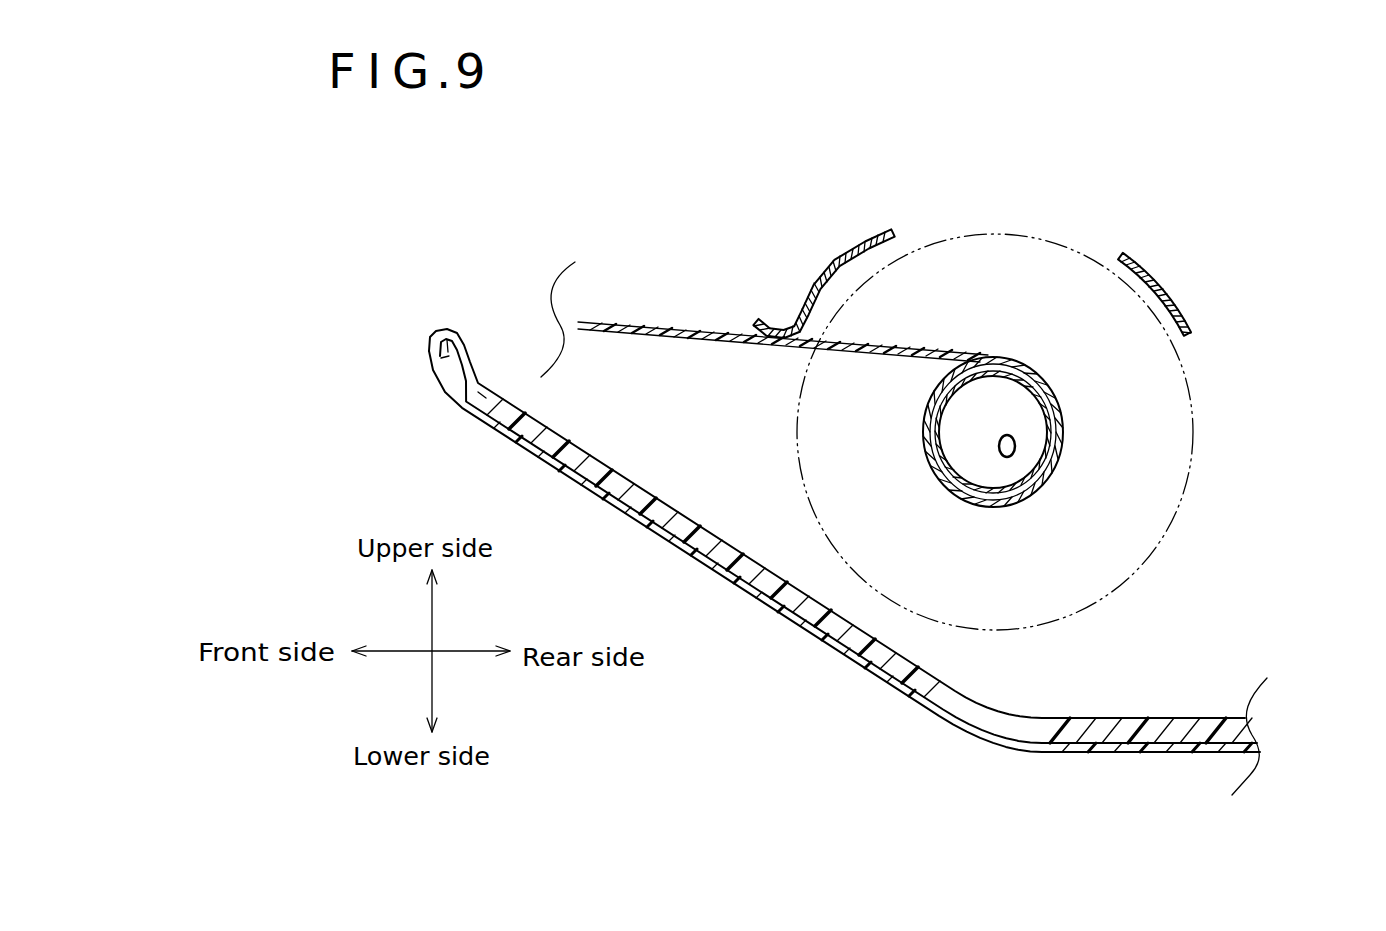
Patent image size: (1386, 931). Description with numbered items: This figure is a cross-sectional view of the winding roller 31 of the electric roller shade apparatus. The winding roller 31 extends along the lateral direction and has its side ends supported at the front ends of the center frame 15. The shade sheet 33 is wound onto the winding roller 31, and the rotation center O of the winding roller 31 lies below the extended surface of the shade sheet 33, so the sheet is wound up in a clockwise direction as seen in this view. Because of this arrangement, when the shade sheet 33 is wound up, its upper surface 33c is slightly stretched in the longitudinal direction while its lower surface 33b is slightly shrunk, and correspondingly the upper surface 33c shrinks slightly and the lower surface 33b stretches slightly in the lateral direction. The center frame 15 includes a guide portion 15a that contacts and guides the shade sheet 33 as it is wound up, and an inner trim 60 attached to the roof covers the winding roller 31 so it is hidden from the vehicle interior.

The center frame 15 is at (1182, 257).
The guide portion 15a is at (768, 335).
The winding roller 31 is at (1063, 436).
The shade sheet 33 is at (800, 352).
The lower surface 33b is at (890, 355).
The upper surface 33c is at (930, 348).
The inner trim 60 is at (745, 570).